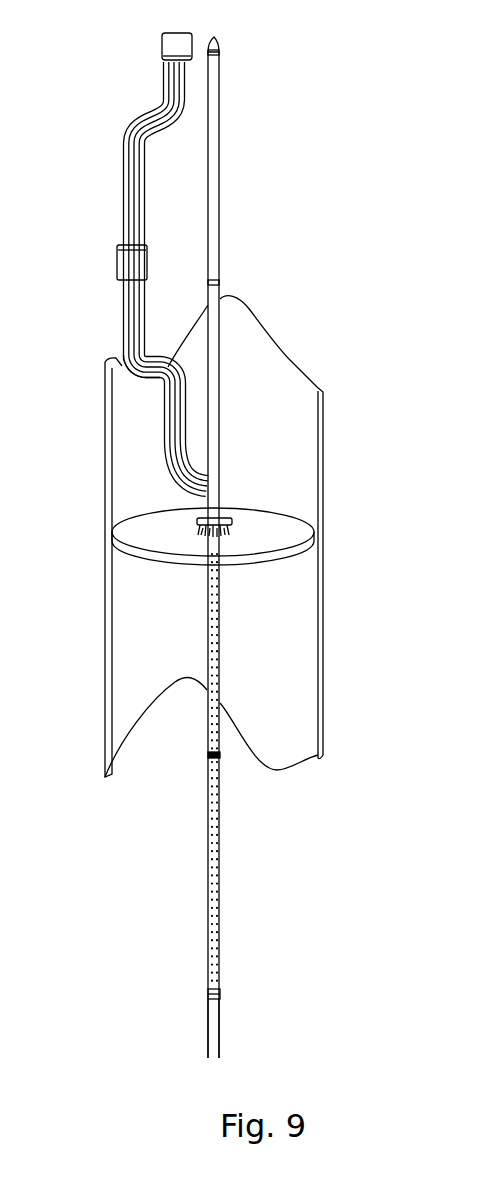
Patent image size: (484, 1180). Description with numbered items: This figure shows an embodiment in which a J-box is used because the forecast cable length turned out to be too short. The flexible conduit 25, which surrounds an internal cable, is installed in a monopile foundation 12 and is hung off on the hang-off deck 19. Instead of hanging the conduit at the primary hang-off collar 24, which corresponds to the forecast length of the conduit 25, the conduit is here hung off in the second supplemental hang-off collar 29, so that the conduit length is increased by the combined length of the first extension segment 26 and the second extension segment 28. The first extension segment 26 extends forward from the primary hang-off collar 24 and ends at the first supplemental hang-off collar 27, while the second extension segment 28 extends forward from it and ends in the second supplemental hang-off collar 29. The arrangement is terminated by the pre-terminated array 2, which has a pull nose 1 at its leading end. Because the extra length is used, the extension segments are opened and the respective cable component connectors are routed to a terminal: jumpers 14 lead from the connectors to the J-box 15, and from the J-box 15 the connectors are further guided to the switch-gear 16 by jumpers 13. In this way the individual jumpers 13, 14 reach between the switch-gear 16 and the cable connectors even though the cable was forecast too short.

The pull nose 1 is at (219, 50).
The pre-terminated array 2 is at (220, 160).
The monopile foundation 12 is at (287, 352).
The jumpers 13 is at (137, 165).
The jumpers 14 is at (135, 358).
The J-box 15 is at (128, 263).
The switch-gear 16 is at (175, 48).
The hang-off deck 19 is at (285, 528).
The primary hang-off collar 24 is at (211, 993).
The conduit 25 is at (212, 1035).
The first extension segment 26 is at (212, 852).
The first supplemental hang-off collar 27 is at (207, 757).
The second extension segment 28 is at (206, 620).
The second supplemental hang-off collar 29 is at (203, 525).